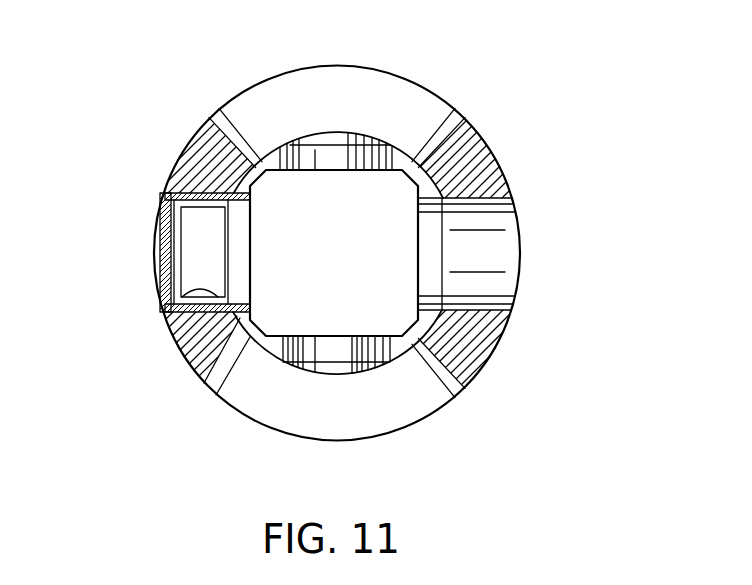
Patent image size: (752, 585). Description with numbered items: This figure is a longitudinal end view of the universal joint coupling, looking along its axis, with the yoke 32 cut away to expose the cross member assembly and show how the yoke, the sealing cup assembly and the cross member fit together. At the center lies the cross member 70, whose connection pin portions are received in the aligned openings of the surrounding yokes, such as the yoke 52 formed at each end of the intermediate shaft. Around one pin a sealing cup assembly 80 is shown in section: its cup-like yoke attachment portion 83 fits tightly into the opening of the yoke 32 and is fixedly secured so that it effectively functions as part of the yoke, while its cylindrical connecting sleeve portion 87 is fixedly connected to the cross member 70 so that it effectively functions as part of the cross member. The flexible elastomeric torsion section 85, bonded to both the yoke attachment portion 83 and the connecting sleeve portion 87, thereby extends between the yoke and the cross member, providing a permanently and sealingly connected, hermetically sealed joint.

The yoke 52 is at (387, 123).
The yoke 32 is at (208, 167).
The cross member 70 is at (378, 247).
The sealing cup assembly 80 is at (325, 150).
The yoke attachment portion 83 is at (165, 194).
The elastomeric torsion section 85 is at (165, 314).
The connecting sleeve portion 87 is at (200, 352).